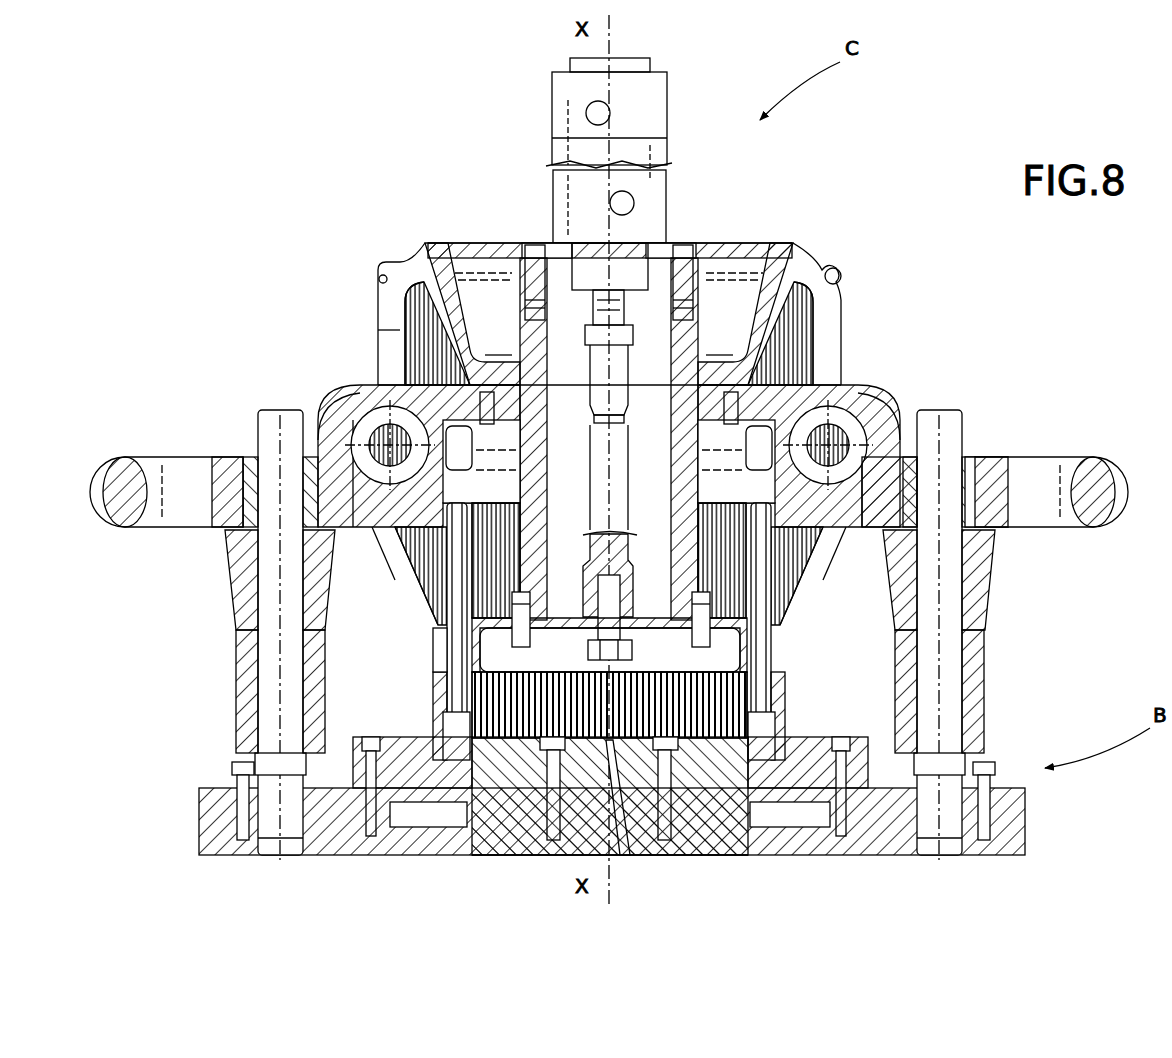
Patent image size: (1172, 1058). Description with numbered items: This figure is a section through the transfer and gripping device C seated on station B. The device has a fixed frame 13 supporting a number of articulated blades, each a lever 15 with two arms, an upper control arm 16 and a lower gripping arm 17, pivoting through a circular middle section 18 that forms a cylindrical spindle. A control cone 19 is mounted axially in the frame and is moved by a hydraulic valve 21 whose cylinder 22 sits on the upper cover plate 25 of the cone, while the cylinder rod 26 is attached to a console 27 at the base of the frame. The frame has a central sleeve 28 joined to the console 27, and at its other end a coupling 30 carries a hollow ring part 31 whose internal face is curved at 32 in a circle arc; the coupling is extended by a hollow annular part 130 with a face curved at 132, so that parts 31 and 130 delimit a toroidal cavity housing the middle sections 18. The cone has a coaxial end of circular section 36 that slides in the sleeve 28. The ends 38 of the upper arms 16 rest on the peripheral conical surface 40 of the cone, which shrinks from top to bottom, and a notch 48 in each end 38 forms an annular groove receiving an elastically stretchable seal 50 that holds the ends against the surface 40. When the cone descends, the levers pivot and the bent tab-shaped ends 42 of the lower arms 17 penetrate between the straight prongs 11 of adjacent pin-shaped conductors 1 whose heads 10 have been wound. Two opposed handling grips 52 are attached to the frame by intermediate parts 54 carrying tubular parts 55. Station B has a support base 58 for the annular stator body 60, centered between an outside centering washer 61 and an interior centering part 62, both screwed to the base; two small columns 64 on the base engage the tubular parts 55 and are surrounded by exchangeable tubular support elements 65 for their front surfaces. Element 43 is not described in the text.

The pin-shaped conductor 1 is at (765, 635).
The head of the pin 10 is at (790, 530).
The straight prong 11 is at (772, 700).
The fixed frame 13 is at (345, 400).
The articulated blade (lever) 15 is at (340, 315).
The upper control arm 16 is at (378, 330).
The lower gripping arm 17 is at (408, 578).
The middle section 18 is at (380, 527).
The control cone 19 is at (800, 235).
The valve (actuating cylinder) 21 is at (668, 140).
The cylinder 22 is at (667, 200).
The upper cover plate 25 is at (748, 242).
The cylinder rod 26 is at (628, 305).
The console 27 is at (543, 631).
The central sleeve 28 is at (681, 631).
The coupling 30 is at (609, 314).
The hollow ring part 31 is at (365, 400).
The curved internal face 32 is at (360, 422).
The coaxial end of circular section 36 is at (622, 540).
The end of the upper control arm 38 is at (395, 268).
The peripheral conical surface 40 is at (440, 300).
The tab-shaped end 42 is at (436, 640).
The tie rod 43 is at (452, 600).
The notch 48 is at (830, 268).
The elastically stretchable seal 50 is at (838, 284).
The handling grip 52 is at (118, 462).
The intermediate part 54 is at (968, 460).
The tubular part (centering element) 55 is at (230, 560).
The support base 58 is at (1030, 806).
The annular stator body 60 is at (540, 700).
The outside centering washer 61 is at (350, 770).
The interior centering part 62 is at (628, 855).
The small column 64 is at (272, 685).
The tubular support element 65 is at (245, 738).
The hollow annular part 130 is at (862, 440).
The curved internal face 132 is at (848, 420).